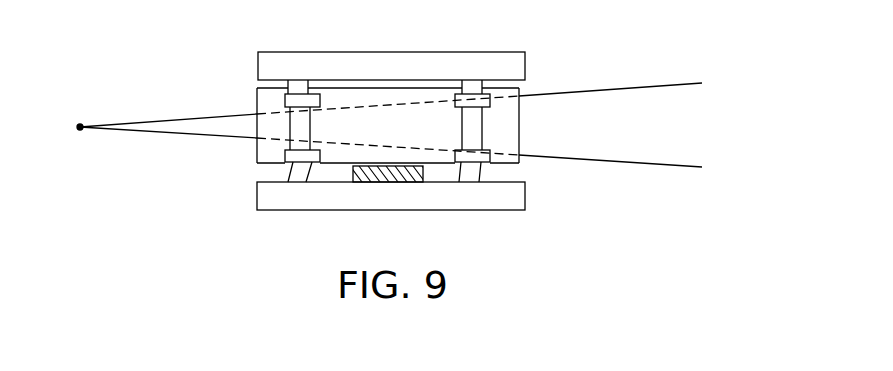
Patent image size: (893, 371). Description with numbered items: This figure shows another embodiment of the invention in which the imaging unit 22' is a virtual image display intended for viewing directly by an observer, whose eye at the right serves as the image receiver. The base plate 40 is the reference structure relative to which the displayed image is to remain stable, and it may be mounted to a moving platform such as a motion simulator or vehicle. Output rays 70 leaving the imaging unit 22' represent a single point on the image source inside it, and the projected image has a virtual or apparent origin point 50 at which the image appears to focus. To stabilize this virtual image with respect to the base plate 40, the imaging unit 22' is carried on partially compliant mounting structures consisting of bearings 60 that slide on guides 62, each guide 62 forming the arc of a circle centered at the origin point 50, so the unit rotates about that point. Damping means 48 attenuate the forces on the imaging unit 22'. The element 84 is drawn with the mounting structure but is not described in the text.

The base plate 40 is at (379, 58).
The imaging unit 22' is at (388, 167).
The damping means 48 is at (385, 178).
The bracket stem 84 is at (298, 82).
The bearings 60 is at (312, 94).
The guides 62 is at (298, 183).
The origin point 50 is at (80, 131).
The output rays 70 is at (585, 92).